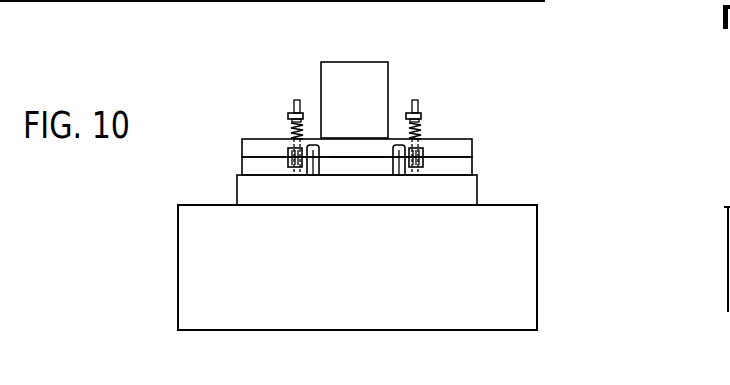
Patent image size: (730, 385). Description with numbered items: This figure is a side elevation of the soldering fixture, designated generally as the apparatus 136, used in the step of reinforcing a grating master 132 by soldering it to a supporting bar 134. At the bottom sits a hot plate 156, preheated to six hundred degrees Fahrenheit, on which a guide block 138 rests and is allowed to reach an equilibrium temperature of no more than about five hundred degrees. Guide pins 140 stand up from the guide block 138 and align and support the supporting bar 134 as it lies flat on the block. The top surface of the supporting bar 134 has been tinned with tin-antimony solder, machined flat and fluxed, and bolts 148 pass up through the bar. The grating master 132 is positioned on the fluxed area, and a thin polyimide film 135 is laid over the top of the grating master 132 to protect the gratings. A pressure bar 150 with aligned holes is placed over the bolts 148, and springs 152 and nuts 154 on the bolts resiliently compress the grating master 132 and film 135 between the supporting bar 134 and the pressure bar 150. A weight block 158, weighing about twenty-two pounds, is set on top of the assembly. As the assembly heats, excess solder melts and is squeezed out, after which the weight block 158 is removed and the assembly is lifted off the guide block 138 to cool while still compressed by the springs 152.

The grating master 132 is at (371, 156).
The supporting bar 134 is at (472, 167).
The film 135 is at (347, 156).
The apparatus 136 is at (590, 163).
The guide block 138 is at (247, 194).
The guide pins 140 is at (389, 160).
The bolts 148 is at (296, 103).
The pressure bar 150 is at (472, 146).
The springs 152 is at (291, 131).
The nuts 154 is at (289, 117).
The hot plate 156 is at (527, 259).
The weight block 158 is at (335, 72).